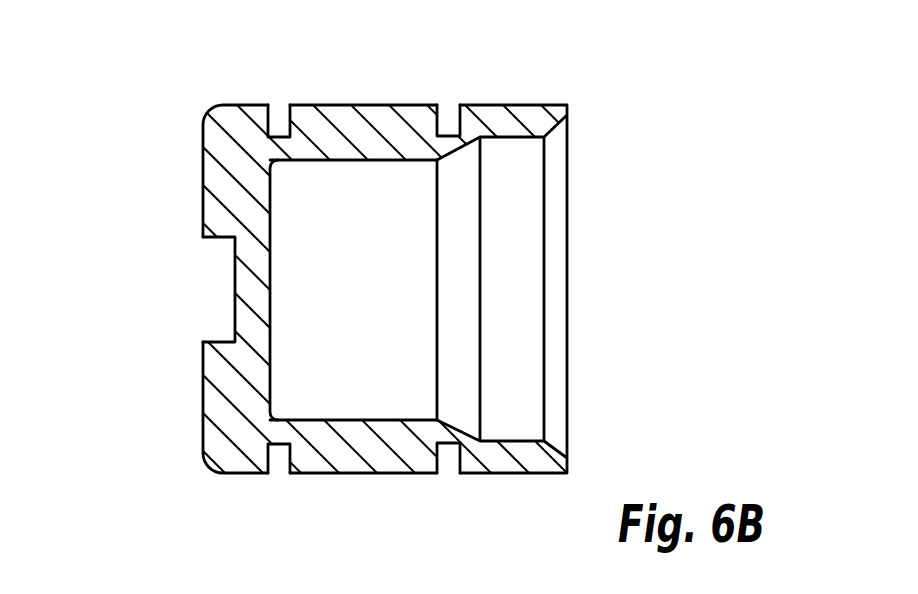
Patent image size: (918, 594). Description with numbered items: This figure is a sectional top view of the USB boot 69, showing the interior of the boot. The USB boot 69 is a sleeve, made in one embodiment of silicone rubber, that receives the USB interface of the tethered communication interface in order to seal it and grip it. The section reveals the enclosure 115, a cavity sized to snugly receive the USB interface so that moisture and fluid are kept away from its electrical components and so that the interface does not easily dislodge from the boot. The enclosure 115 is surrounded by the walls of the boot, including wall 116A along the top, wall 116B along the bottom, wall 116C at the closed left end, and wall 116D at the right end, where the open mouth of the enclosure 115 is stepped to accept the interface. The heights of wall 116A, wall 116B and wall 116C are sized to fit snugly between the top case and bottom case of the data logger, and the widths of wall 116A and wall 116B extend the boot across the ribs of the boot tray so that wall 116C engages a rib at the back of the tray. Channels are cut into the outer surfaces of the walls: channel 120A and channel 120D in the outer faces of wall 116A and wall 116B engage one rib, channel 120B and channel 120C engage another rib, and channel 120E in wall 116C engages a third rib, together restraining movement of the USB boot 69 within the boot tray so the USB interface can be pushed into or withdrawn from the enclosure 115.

The USB boot 69 is at (606, 103).
The enclosure 115 is at (380, 242).
The wall 116A is at (373, 108).
The wall 116B is at (334, 450).
The wall 116C is at (227, 182).
The wall 116D is at (508, 367).
The channel 120A is at (273, 108).
The channel 120B is at (452, 113).
The channel 120C is at (452, 462).
The channel 120D is at (288, 462).
The channel 120E is at (215, 347).